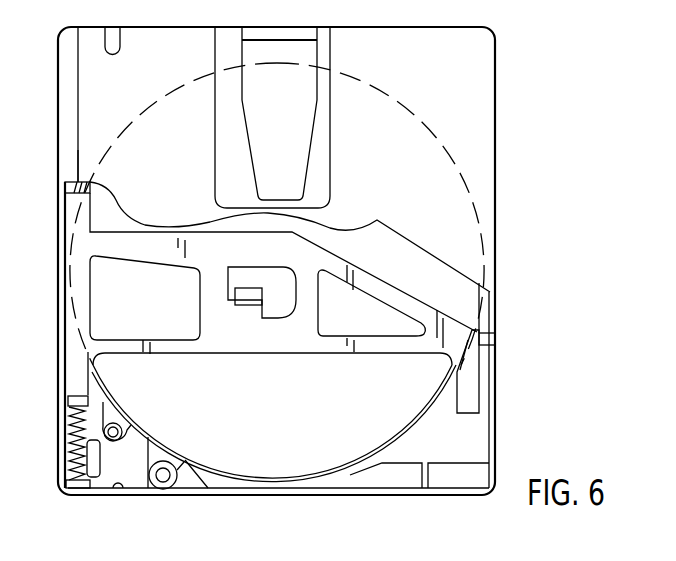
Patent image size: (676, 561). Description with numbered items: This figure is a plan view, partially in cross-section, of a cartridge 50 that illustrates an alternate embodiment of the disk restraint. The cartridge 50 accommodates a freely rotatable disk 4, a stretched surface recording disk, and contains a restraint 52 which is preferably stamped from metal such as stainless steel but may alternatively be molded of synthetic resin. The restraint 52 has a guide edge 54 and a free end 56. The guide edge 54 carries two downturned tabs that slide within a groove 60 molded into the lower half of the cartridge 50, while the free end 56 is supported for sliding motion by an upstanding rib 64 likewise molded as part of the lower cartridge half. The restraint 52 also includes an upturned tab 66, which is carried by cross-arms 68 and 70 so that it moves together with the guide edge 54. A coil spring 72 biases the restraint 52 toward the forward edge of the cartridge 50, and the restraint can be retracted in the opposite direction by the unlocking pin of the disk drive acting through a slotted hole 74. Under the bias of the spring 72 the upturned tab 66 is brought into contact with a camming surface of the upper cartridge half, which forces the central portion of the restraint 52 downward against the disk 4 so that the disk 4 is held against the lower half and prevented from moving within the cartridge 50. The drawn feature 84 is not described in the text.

The disk 4 is at (283, 82).
The cartridge 50 is at (497, 192).
The restraint 52 is at (440, 325).
The guide edge 54 is at (62, 210).
The free end 56 is at (475, 372).
The groove 60 is at (65, 182).
The upstanding rib 64 is at (428, 420).
The upturned tab 66 is at (250, 299).
The cross-arm 68 is at (365, 285).
The cross-arm 70 is at (397, 350).
The coil spring 72 is at (76, 446).
The slotted hole 74 is at (68, 428).
The boss 84 is at (116, 490).